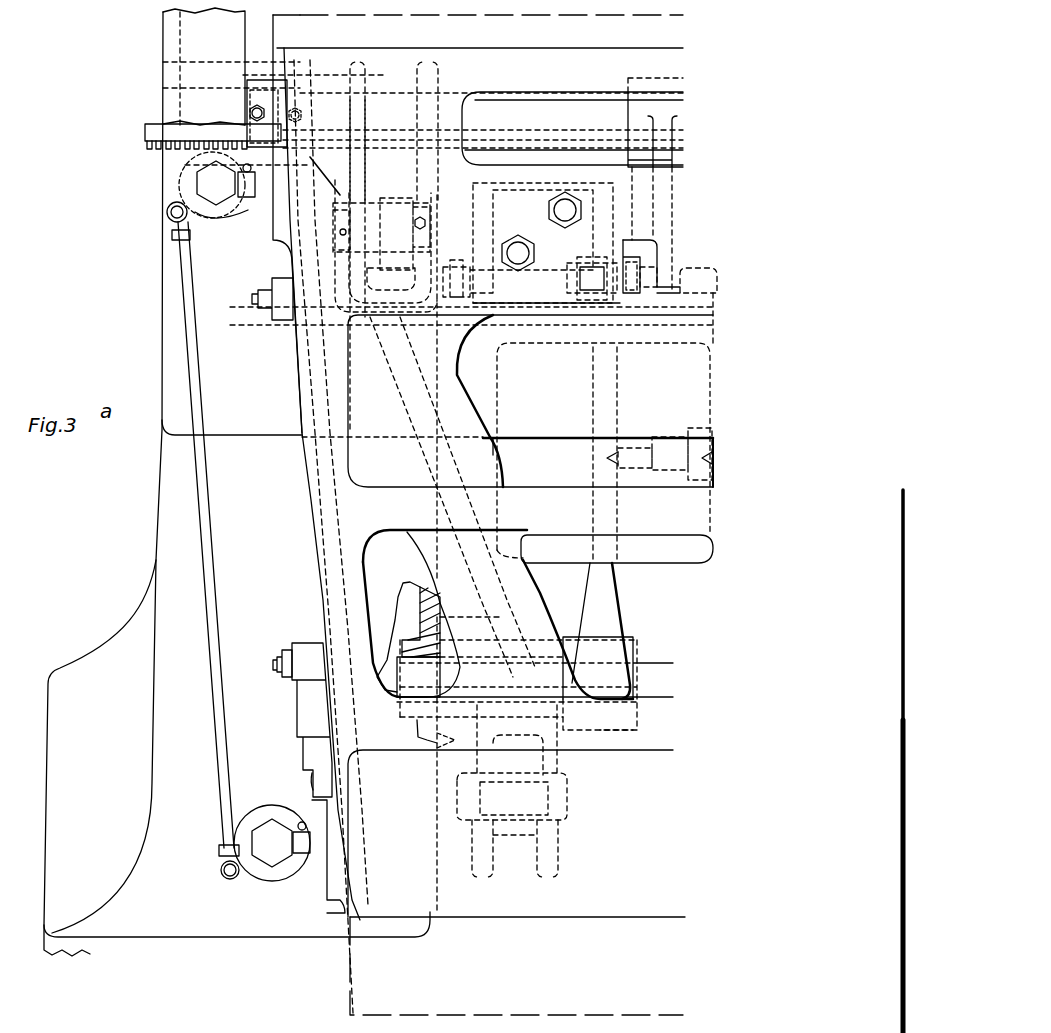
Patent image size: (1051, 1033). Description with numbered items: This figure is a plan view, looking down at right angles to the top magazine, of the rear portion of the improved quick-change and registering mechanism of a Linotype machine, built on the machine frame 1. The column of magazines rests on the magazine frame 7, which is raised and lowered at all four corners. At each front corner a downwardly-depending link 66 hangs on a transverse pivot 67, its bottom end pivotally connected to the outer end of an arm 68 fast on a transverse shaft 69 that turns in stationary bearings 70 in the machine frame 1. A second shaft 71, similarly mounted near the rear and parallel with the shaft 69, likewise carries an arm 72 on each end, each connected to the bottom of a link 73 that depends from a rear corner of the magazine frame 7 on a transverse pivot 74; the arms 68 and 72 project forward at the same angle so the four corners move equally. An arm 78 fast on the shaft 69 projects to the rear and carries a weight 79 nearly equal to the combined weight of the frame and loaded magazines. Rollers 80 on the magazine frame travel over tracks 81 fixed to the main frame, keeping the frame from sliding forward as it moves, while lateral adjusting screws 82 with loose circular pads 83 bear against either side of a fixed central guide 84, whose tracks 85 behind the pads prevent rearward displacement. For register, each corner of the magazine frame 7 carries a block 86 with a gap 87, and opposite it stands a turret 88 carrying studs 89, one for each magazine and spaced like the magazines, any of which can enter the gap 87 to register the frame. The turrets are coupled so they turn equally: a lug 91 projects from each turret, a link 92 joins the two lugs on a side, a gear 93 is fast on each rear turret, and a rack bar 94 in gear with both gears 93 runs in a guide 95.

The machine frame 1 is at (378, 484).
The magazine frame 7 is at (330, 533).
The links 66 is at (515, 840).
The transverse pivot 67 is at (570, 798).
The arm 68 is at (433, 757).
The transverse shaft 69 is at (666, 665).
The stationary bearings 70 is at (538, 618).
The second shaft 71 is at (598, 95).
The arm 72 is at (430, 172).
The link 73 is at (415, 200).
The transverse pivot 74 is at (352, 255).
The arm 78 is at (612, 634).
The weight 79 is at (668, 563).
The rollers 80 is at (460, 258).
The tracks 81 is at (511, 307).
The lateral adjusting screws 82 is at (602, 285).
The circular pads 83 is at (630, 297).
The central guide 84 is at (647, 295).
The tracks 85 is at (660, 236).
The block 86 is at (257, 237).
The gap 87 is at (228, 222).
The turret 88 is at (250, 896).
The studs 89 is at (256, 218).
The lug 91 is at (168, 208).
The link 92 is at (206, 518).
The gear 93 is at (180, 160).
The rack bar 94 is at (145, 133).
The guide 95 is at (170, 125).